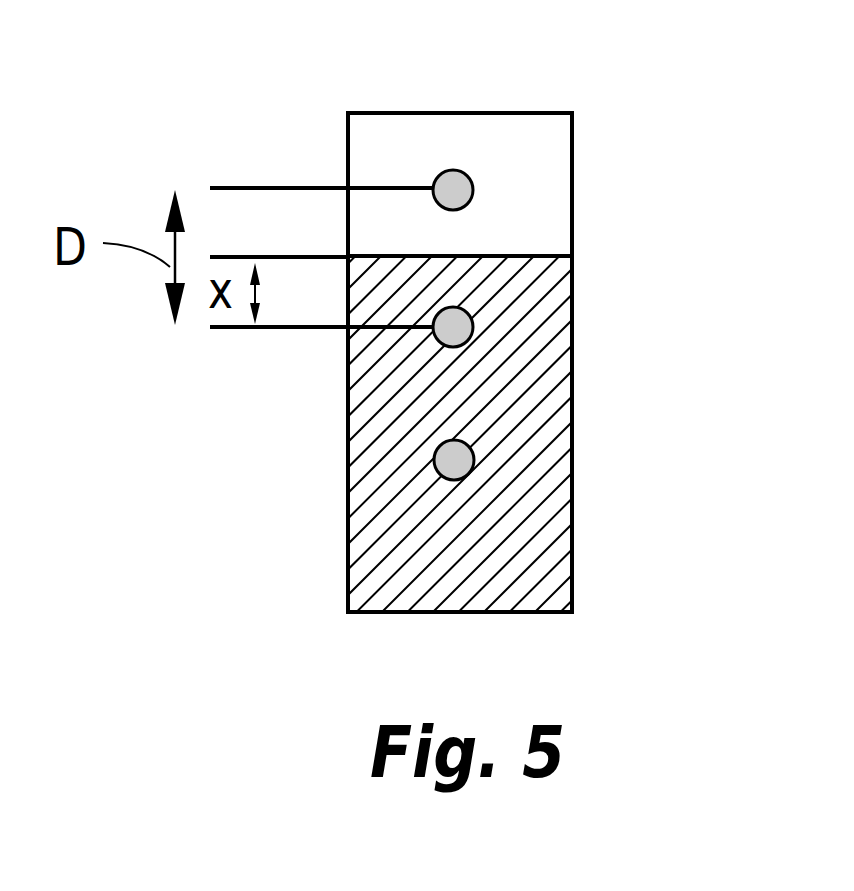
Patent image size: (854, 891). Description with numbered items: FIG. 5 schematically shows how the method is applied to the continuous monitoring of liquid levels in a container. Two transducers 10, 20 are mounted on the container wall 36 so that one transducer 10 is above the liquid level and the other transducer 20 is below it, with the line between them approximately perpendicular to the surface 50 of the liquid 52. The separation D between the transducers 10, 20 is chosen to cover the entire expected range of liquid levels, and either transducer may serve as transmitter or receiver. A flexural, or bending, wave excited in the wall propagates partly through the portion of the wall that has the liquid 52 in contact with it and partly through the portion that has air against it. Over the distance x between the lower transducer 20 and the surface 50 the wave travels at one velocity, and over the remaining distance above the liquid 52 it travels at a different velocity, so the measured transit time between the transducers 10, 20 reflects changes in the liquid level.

The transducer 10 is at (452, 170).
The transducer 20 is at (476, 307).
The upper region / substrate 36 is at (460, 143).
The surface 50 is at (545, 256).
The liquid 52 is at (556, 431).